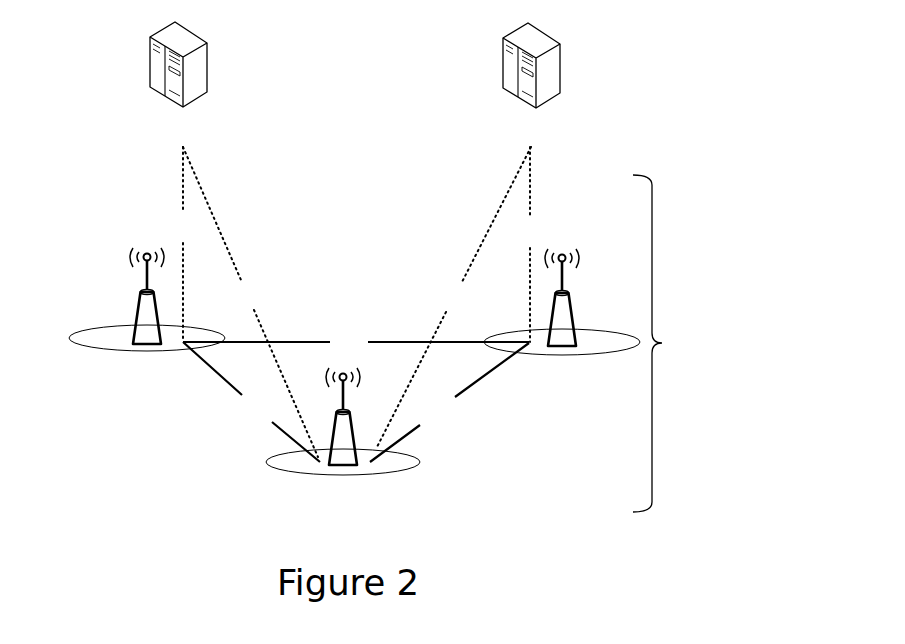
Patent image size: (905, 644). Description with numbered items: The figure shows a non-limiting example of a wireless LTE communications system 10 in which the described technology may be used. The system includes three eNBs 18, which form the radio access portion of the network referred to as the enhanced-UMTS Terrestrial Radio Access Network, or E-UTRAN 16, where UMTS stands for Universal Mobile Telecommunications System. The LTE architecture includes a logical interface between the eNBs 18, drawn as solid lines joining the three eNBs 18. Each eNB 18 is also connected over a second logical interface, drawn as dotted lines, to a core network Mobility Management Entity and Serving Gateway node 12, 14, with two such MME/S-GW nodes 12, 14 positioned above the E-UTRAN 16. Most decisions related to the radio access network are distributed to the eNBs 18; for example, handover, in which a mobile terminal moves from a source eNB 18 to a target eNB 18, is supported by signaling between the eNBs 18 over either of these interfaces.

The LTE system 10 is at (56, 58).
The Mobility Management Entity/Serving Gateway node 12 is at (208, 65).
The Mobility Management Entity/Serving Gateway node 14 is at (565, 67).
The enhanced-UMTS Terrestrial Radio Access Network 16 is at (726, 343).
The eNB 18 is at (133, 312).